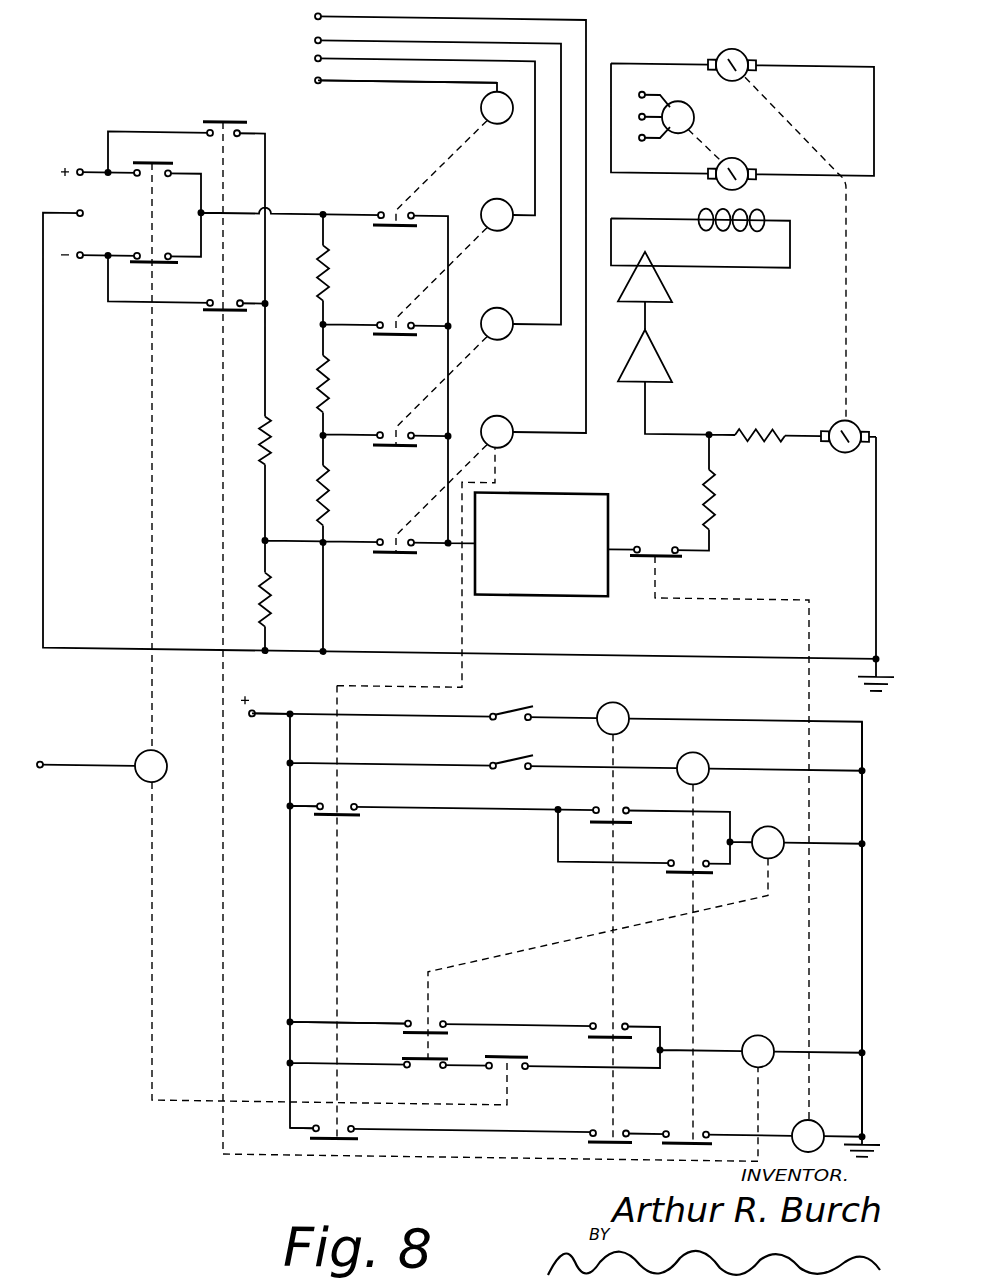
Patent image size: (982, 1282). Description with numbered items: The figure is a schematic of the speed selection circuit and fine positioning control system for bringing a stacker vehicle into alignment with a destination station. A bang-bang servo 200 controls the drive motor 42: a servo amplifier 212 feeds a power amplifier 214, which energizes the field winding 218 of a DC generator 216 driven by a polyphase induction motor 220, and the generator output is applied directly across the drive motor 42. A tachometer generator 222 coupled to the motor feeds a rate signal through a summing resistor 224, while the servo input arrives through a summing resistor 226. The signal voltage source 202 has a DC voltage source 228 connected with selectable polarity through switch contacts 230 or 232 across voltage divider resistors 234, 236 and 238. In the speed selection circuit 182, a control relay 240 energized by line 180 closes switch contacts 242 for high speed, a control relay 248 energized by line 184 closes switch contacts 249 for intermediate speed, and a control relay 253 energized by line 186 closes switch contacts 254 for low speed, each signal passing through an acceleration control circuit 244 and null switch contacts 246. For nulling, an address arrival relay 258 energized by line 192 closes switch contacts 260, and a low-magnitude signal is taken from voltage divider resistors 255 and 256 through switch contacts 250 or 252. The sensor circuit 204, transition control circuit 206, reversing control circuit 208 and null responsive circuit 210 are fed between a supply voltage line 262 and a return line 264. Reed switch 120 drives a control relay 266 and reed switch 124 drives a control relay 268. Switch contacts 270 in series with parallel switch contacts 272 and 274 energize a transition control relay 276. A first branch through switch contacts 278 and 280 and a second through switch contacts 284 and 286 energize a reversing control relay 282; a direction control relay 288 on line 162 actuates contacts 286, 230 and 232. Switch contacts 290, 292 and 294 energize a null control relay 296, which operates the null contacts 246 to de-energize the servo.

The drive motor 42 is at (745, 47).
The reed switch 120 is at (533, 697).
The reed switch 124 is at (508, 755).
The line 162 is at (40, 768).
The line 180 is at (362, 77).
The speed selection circuit 182 is at (447, 129).
The line 184 is at (315, 55).
The line 186 is at (315, 36).
The line 192 is at (315, 10).
The servo 200 is at (724, 303).
The signal voltage source 202 is at (95, 155).
The sensor circuit 204 is at (332, 707).
The transition control circuit 206 is at (289, 798).
The reversing control circuit 208 is at (282, 1001).
The null responsive circuit 210 is at (300, 1132).
The servo amplifier 212 is at (652, 352).
The power amplifier 214 is at (652, 276).
The DC generator 216 is at (740, 157).
The field winding 218 is at (752, 201).
The motor 220 is at (694, 110).
The tachometer generator 222 is at (824, 410).
The summing resistor 224 is at (742, 417).
The summing resistor 226 is at (755, 500).
The DC voltage source 228 is at (88, 175).
The switch contacts 230 is at (168, 162).
The switch contacts 232 is at (160, 262).
The voltage divider resistor 234 is at (330, 258).
The voltage divider resistor 236 is at (330, 366).
The voltage divider resistor 238 is at (330, 486).
The control relay 240 is at (500, 115).
The switch contacts 242 is at (393, 218).
The acceleration control circuit 244 is at (582, 500).
The null switch contacts 246 is at (703, 566).
The control relay 248 is at (500, 222).
The switch contacts 249 is at (392, 318).
The switch contacts 250 is at (221, 118).
The switch contacts 252 is at (225, 308).
The control relay 253 is at (503, 330).
The switch contacts 254 is at (390, 428).
The voltage divider resistor 255 is at (260, 441).
The voltage divider resistor 256 is at (292, 560).
The address arrival relay 258 is at (503, 413).
The switch contacts 260 is at (384, 549).
The supply voltage line 262 is at (275, 714).
The return line 264 is at (862, 883).
The control relay 266 is at (630, 703).
The control relay 268 is at (706, 752).
The switch contacts 270 is at (350, 812).
The switch contacts 272 is at (622, 816).
The switch contacts 274 is at (680, 866).
The transition control relay 276 is at (770, 816).
The switch contacts 278 is at (432, 1027).
The switch contacts 280 is at (615, 1029).
The reversing control relay 282 is at (757, 1025).
The switch contacts 284 is at (433, 1057).
The switch contacts 286 is at (512, 1053).
The direction control relay 288 is at (150, 748).
The switch contacts 290 is at (345, 1138).
The switch contacts 292 is at (613, 1134).
The switch contacts 294 is at (693, 1134).
The null control relay 296 is at (812, 1113).